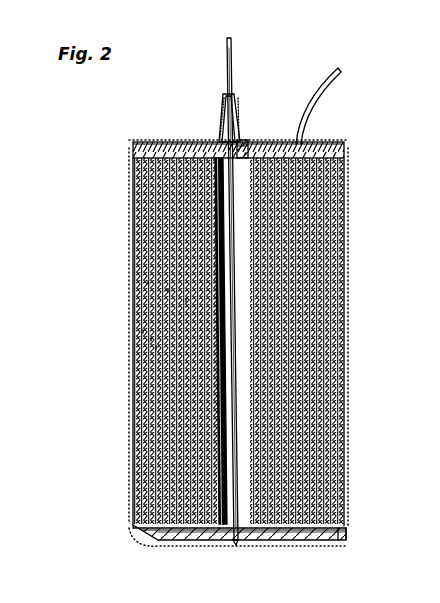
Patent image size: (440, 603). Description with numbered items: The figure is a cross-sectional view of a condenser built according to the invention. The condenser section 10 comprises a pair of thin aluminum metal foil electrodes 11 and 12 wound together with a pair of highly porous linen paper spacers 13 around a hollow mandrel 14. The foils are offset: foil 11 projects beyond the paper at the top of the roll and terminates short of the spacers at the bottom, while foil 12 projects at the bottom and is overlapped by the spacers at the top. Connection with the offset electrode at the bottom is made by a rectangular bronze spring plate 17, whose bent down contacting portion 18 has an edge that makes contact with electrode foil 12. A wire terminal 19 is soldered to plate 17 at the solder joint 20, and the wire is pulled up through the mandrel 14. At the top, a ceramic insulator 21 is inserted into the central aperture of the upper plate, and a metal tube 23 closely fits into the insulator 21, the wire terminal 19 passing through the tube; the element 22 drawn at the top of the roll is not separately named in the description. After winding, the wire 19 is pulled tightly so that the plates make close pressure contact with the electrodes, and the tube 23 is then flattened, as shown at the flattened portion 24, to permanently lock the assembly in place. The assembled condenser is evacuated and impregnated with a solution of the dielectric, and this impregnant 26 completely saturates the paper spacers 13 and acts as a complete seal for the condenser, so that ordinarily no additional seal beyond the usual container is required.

The condenser section 10 is at (120, 188).
The metal foil electrode 11 is at (165, 232).
The metal foil electrode 12 is at (178, 291).
The porous linen paper spacers 13 is at (148, 338).
The hollow mandrel 14 is at (240, 297).
The bronze spring plate 17 is at (299, 534).
The bent down contacting portion 18 is at (326, 530).
The wire terminal 19 is at (223, 31).
The solder joint 20 is at (229, 536).
The ceramic insulator 21 is at (237, 132).
The top cover band 22 is at (186, 140).
The metal tube 23 is at (231, 102).
The flattened portion 24 is at (227, 85).
The impregnant 26 is at (338, 320).